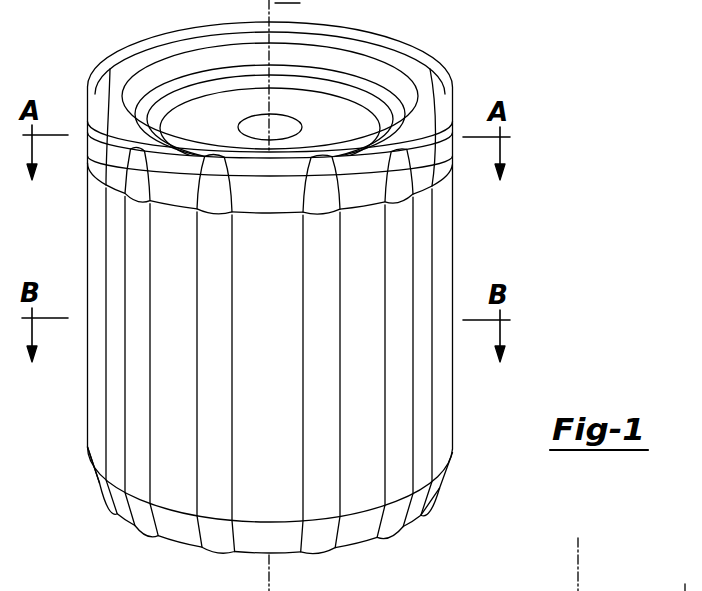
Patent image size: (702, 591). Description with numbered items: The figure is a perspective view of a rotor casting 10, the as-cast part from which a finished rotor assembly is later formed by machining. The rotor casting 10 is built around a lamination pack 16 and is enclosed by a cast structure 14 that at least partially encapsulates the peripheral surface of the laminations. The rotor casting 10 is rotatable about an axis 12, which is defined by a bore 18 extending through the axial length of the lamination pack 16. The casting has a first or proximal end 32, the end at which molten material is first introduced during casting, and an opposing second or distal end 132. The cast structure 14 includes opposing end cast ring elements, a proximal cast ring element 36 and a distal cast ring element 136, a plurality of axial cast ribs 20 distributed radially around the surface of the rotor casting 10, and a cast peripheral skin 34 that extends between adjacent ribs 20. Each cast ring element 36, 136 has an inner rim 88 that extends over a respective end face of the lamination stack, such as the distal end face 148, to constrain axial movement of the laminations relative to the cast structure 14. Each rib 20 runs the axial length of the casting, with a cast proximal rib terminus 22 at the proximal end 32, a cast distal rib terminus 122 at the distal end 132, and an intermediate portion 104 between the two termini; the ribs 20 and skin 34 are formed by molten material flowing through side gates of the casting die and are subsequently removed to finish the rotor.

The rotor casting 10 is at (499, 40).
The axis 12 is at (582, 570).
The cast structure 14 is at (469, 417).
The lamination pack 16 is at (213, 120).
The bore 18 is at (276, 130).
The cast ribs 20 is at (85, 250).
The cast proximal rib terminus 22 is at (98, 483).
The proximal end 32 is at (87, 513).
The cast peripheral skin 34 is at (115, 390).
The proximal cast ring element 36 is at (417, 494).
The inner rim 88 is at (373, 76).
The intermediate portion of the axial rib 104 is at (445, 392).
The cast distal rib terminus 122 is at (88, 155).
The distal end 132 is at (102, 50).
The distal cast ring element 136 is at (428, 156).
The distal end face 148 is at (687, 577).